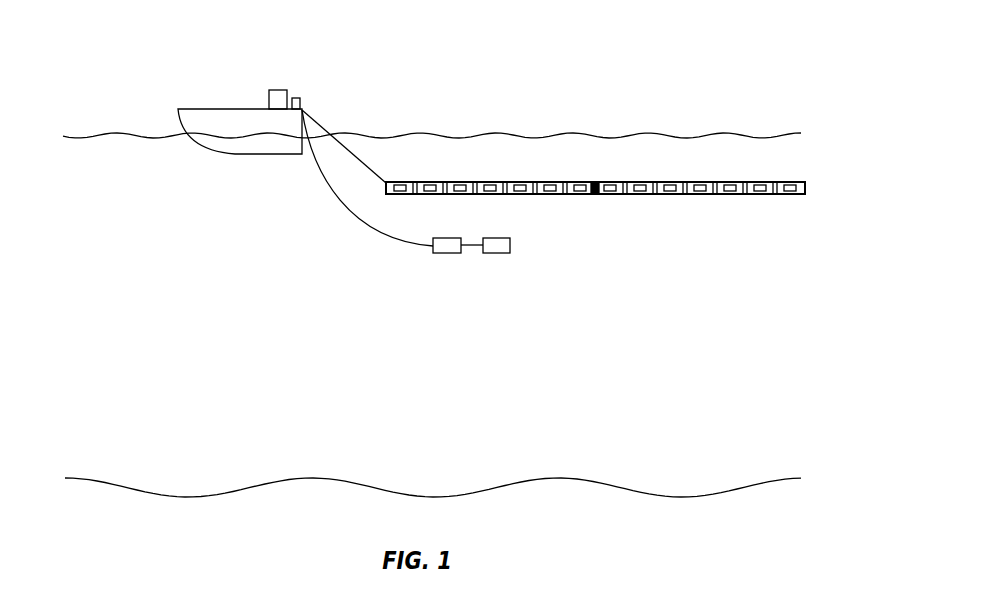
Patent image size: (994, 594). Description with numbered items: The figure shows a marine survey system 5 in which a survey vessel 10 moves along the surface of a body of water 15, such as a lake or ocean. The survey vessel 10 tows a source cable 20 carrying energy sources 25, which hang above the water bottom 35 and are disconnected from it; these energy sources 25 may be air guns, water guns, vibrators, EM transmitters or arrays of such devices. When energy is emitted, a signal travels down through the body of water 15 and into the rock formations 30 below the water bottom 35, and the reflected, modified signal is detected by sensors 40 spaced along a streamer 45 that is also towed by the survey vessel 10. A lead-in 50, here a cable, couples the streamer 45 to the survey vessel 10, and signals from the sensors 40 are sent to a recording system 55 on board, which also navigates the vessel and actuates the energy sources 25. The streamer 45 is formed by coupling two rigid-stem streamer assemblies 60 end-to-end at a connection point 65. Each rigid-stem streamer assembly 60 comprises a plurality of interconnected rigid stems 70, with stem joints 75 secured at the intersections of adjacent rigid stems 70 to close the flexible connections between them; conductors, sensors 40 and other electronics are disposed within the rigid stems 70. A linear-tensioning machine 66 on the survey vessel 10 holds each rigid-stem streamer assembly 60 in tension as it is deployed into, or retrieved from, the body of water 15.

The marine survey system 5 is at (348, 277).
The survey vessel 10 is at (200, 108).
The body of water 15 is at (238, 271).
The source cable 20 is at (338, 207).
The energy sources 25 is at (450, 253).
The rock formations 30 is at (540, 514).
The water bottom 35 is at (557, 476).
The sensors 40 is at (398, 185).
The streamer 45 is at (643, 272).
The lead-in 50 is at (349, 151).
The recording system 55 is at (277, 90).
The rigid-stem streamer assembly 60 is at (497, 197).
The connection point 65 is at (595, 182).
The linear-tensioning machine 66 is at (302, 98).
The rigid stems 70 is at (403, 194).
The stem joints 75 is at (415, 182).